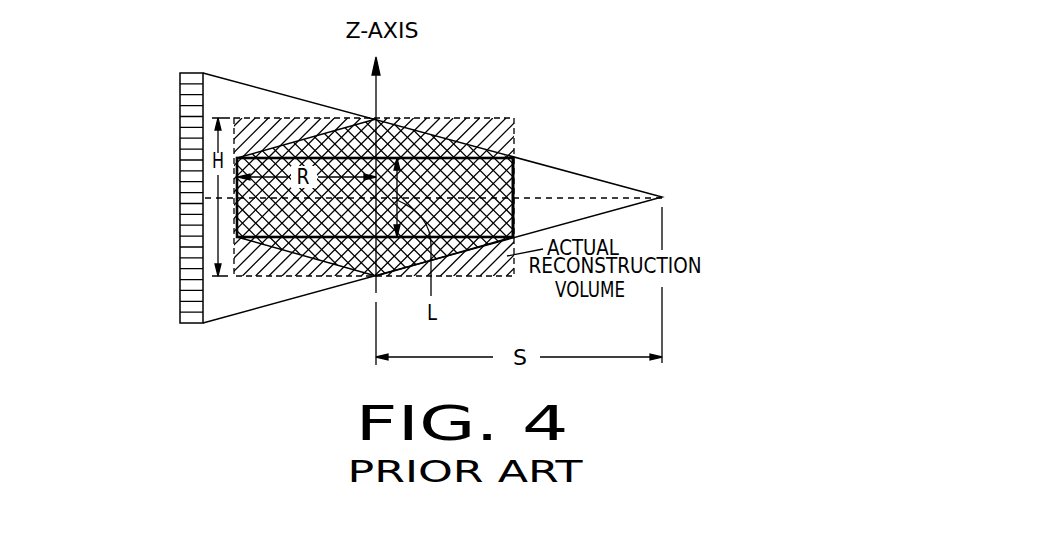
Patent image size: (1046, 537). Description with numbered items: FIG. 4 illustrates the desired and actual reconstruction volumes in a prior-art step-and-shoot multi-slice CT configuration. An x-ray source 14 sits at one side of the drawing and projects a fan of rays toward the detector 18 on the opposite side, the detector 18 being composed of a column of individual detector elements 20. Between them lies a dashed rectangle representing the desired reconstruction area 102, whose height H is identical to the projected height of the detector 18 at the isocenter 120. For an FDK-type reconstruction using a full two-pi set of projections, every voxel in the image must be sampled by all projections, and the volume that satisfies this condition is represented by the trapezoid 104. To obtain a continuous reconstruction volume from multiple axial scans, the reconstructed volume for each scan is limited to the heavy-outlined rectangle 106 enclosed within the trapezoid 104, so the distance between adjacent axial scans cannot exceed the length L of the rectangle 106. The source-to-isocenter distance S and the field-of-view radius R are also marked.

The x-ray source 14 is at (663, 197).
The detector 18 is at (178, 245).
The detector elements 20 is at (178, 164).
The desired reconstruction area 102 is at (457, 118).
The trapezoid 104 is at (309, 134).
The rectangle 106 is at (513, 182).
The isocenter 120 is at (337, 269).